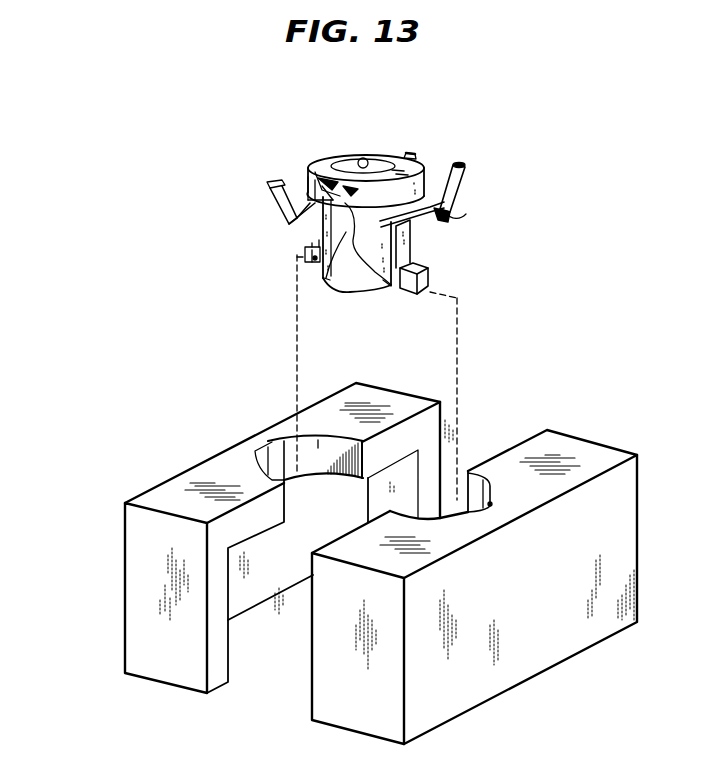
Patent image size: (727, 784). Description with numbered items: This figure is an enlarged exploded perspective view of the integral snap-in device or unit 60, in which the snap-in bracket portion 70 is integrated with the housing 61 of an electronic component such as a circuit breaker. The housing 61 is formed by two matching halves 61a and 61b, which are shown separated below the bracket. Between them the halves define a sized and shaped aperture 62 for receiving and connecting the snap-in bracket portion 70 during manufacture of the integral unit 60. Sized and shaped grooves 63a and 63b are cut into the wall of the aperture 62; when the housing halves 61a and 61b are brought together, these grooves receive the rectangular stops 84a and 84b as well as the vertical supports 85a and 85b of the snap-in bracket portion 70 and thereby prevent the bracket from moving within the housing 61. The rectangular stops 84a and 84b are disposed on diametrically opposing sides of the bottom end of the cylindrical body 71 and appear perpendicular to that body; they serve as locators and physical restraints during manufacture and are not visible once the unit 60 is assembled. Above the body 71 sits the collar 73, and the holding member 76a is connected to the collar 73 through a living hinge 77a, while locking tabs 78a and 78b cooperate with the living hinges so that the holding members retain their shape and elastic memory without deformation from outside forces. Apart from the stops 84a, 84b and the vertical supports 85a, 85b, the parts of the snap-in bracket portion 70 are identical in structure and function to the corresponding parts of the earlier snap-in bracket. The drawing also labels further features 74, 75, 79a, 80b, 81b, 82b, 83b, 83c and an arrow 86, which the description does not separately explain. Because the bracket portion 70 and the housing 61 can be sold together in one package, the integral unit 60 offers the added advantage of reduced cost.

The integral snap-in device or unit 60 is at (88, 430).
The housing 61 is at (140, 592).
The housing half 61a is at (140, 527).
The housing half 61b is at (325, 632).
The aperture 62 is at (318, 448).
The groove 63a is at (270, 445).
The groove 63b is at (490, 503).
The snap-in bracket portion 70 is at (268, 161).
The cylindrical body 71 is at (348, 282).
The collar 73 is at (427, 195).
The tab 74 is at (383, 157).
The central opening 75 is at (362, 161).
The holding member 76a is at (322, 186).
The living hinge 77a is at (318, 174).
The locking tab 78a is at (300, 191).
The locking tab 78b is at (330, 280).
The right arm 79a is at (450, 217).
The hinge 80b is at (450, 218).
The lower body portion 81b is at (391, 286).
The body slot 82b is at (370, 272).
The cap slot 83b is at (322, 178).
The lever strip 83c is at (462, 165).
The rectangular stop 84a is at (305, 250).
The rectangular stop 84b is at (430, 275).
The vertical support 85a is at (317, 233).
The vertical support 85b is at (408, 248).
The direction of arm movement 86 is at (270, 229).